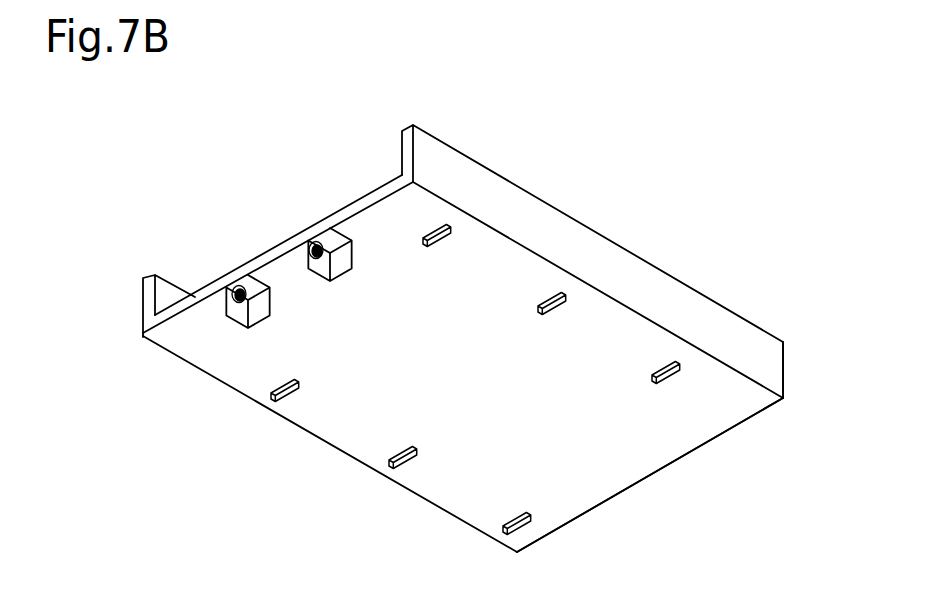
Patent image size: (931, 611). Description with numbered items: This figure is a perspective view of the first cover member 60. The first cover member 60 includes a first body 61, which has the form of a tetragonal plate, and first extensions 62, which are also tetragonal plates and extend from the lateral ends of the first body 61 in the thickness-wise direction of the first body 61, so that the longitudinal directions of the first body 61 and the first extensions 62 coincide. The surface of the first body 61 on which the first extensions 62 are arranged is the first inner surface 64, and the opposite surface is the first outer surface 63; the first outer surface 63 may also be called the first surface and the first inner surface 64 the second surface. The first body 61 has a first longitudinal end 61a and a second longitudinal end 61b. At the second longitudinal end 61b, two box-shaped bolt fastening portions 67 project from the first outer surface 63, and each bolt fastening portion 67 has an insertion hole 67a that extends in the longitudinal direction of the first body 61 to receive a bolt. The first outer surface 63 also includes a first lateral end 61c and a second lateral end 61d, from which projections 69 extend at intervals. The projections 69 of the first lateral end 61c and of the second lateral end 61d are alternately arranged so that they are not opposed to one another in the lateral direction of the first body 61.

The first cover member 60 is at (740, 153).
The first body 61 is at (380, 213).
The first longitudinal end 61a is at (578, 517).
The second longitudinal end 61b is at (208, 295).
The first lateral end 61c is at (322, 440).
The second lateral end 61d is at (657, 323).
The first extension 62 is at (625, 262).
The first outer surface 63 is at (727, 417).
The first inner surface 64 is at (293, 233).
The bolt fastening portion 67 is at (347, 248).
The insertion hole 67a is at (315, 247).
The projection 69 is at (435, 222).